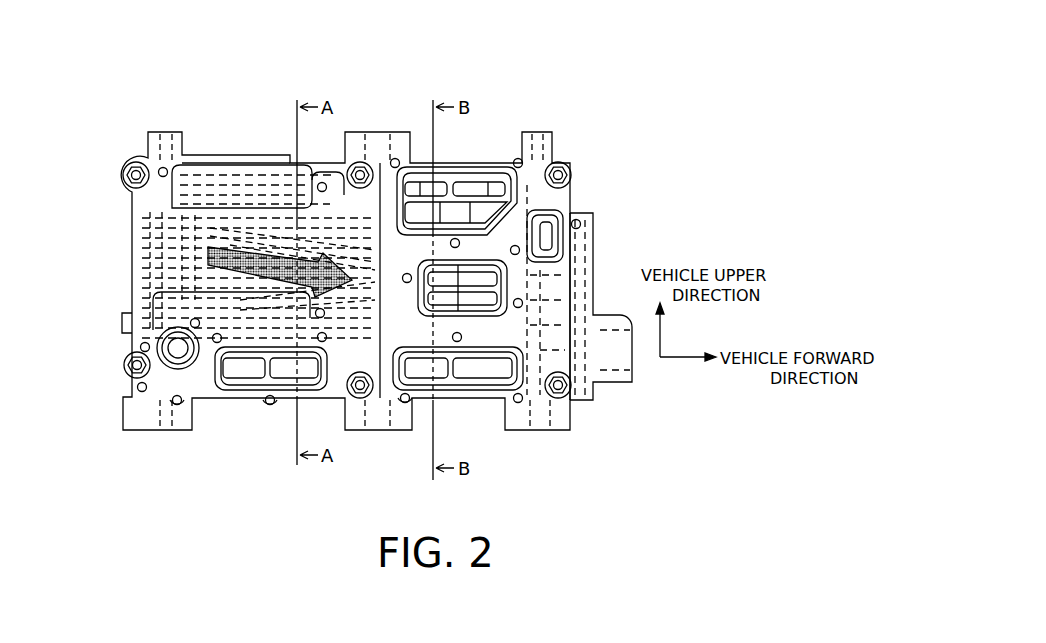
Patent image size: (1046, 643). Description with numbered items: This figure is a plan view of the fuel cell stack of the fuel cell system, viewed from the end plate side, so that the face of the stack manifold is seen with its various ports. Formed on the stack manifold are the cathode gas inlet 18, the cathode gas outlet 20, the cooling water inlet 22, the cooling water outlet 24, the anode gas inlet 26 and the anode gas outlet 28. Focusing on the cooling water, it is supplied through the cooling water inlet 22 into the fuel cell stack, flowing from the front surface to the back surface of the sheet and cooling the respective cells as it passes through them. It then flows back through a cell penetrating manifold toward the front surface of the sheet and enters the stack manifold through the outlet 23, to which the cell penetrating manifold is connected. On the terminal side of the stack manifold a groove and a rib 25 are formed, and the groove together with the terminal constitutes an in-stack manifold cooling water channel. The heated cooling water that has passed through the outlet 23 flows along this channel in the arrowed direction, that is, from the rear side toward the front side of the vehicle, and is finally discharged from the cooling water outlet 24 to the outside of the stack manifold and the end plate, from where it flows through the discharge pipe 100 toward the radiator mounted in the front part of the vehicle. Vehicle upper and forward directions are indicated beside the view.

The cathode gas inlet 18 is at (247, 373).
The cathode gas outlet 20 is at (440, 187).
The cooling water inlet 22 is at (550, 307).
The outlet 23 is at (163, 213).
The cooling water outlet 24 is at (498, 314).
The rib 25 is at (243, 227).
The anode gas inlet 26 is at (545, 225).
The anode gas outlet 28 is at (172, 347).
The discharge pipe 100 is at (230, 277).